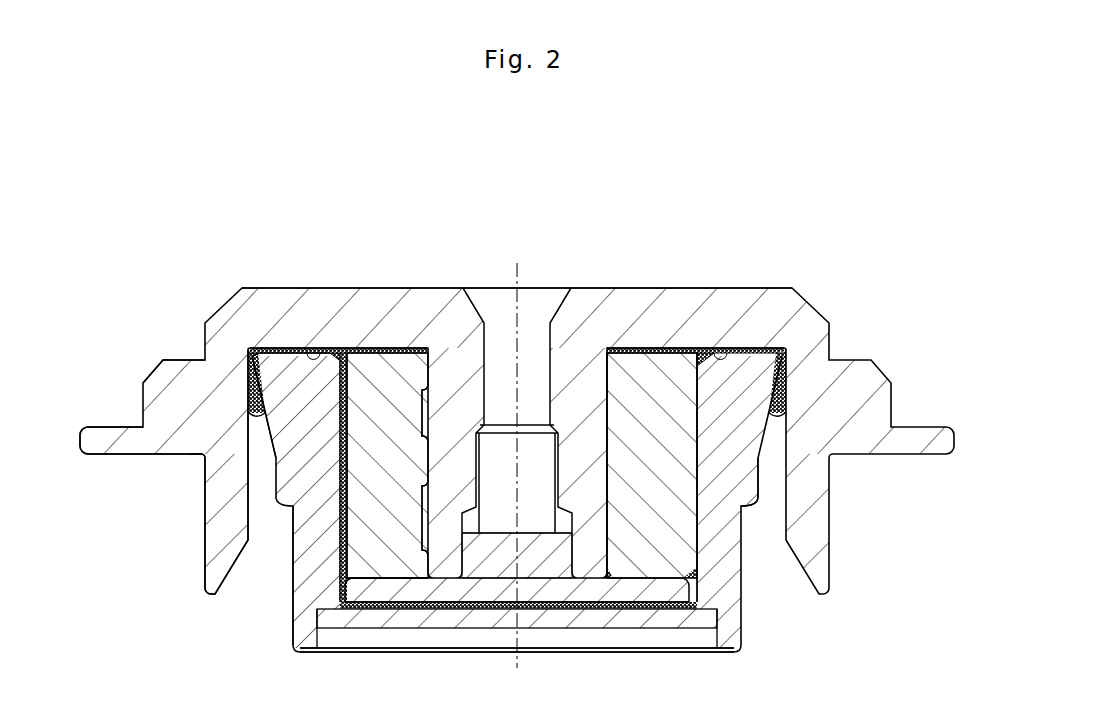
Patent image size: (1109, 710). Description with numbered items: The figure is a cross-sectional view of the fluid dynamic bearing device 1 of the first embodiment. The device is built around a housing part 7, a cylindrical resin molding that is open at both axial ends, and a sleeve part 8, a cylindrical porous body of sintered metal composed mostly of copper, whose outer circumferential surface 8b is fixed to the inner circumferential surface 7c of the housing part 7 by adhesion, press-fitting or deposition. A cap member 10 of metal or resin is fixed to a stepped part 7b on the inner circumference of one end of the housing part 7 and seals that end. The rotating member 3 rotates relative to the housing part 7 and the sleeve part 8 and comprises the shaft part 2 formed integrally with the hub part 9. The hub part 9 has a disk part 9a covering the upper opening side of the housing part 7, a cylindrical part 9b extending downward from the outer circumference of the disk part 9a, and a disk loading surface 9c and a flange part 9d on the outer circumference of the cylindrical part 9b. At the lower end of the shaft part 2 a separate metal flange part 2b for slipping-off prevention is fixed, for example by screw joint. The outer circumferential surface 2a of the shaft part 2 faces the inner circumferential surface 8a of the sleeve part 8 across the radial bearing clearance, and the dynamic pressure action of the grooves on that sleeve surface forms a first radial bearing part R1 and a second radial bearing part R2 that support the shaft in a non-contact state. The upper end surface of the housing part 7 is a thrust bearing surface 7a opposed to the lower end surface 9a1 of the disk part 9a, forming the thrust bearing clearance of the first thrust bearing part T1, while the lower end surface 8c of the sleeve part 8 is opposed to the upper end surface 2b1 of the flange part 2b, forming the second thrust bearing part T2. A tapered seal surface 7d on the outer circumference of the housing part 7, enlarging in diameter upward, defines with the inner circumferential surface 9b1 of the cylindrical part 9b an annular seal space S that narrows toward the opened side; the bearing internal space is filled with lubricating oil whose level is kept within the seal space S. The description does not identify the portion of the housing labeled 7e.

The fluid dynamic bearing device 1 is at (624, 212).
The shaft part 2 is at (599, 434).
The outer circumferential surface of the shaft part 2a is at (643, 585).
The flange part 2b is at (609, 598).
The upper end surface of the flange part 2b1 is at (383, 580).
The rotating member 3 is at (320, 284).
The housing part 7 is at (736, 418).
The thrust bearing surface 7a is at (262, 350).
The stepped part 7b is at (331, 614).
The inner circumferential surface of the housing part 7c is at (690, 409).
The tapered seal surface 7d is at (246, 468).
The outer wall surface 7e is at (292, 596).
The sleeve part 8 is at (674, 538).
The inner circumferential surface of the sleeve part 8a is at (606, 494).
The outer circumferential surface of the sleeve part 8b is at (222, 548).
The lower end surface of the sleeve part 8c is at (368, 581).
The hub part 9 is at (741, 284).
The disk part 9a is at (660, 318).
The lower end surface of the disk part 9a1 is at (345, 332).
The cylindrical part 9b is at (220, 508).
The inner circumferential surface of the cylindrical part 9b1 is at (205, 468).
The disk loading surface 9c is at (187, 358).
The flange part 9d is at (100, 440).
The cap member 10 is at (499, 626).
The seal space S is at (244, 396).
The first thrust bearing part T1 is at (292, 348).
The second thrust bearing part T2 is at (383, 612).
The first radial bearing part R1 is at (408, 428).
The second radial bearing part R2 is at (405, 524).